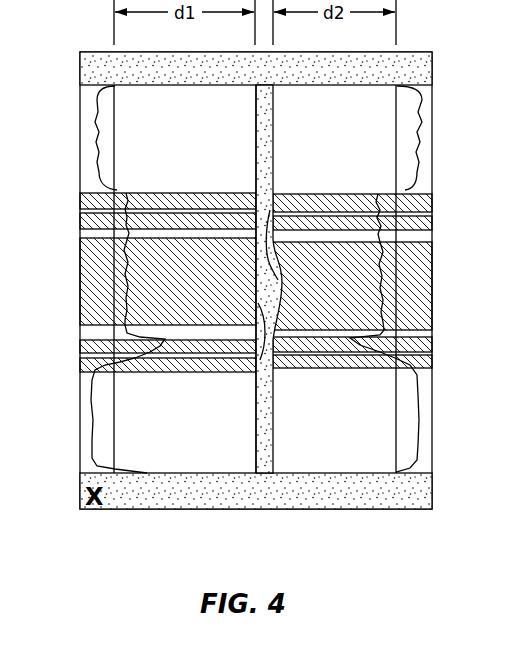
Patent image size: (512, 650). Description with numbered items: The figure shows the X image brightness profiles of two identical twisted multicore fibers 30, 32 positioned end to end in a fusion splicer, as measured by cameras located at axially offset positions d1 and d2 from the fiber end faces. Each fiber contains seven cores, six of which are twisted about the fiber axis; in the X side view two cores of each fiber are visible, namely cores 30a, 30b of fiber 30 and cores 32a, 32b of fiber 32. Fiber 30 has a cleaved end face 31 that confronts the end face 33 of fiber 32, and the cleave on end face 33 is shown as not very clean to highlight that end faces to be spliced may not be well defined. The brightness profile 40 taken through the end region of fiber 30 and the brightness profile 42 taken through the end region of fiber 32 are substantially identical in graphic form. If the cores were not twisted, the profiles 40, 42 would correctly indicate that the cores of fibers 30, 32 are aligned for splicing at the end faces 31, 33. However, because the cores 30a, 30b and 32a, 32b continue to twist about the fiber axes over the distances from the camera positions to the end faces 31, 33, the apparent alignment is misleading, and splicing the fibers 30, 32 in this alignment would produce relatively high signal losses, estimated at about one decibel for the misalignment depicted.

The twisted multicore fiber 30 is at (75, 271).
The core 30a is at (80, 224).
The core 30b is at (80, 346).
The twisted multicore fiber 32 is at (437, 272).
The core 32a is at (432, 226).
The core 32b is at (432, 344).
The end face 31 is at (260, 360).
The end face 33 is at (270, 210).
The X image brightness profile 40 is at (96, 121).
The X image brightness profile 42 is at (420, 122).